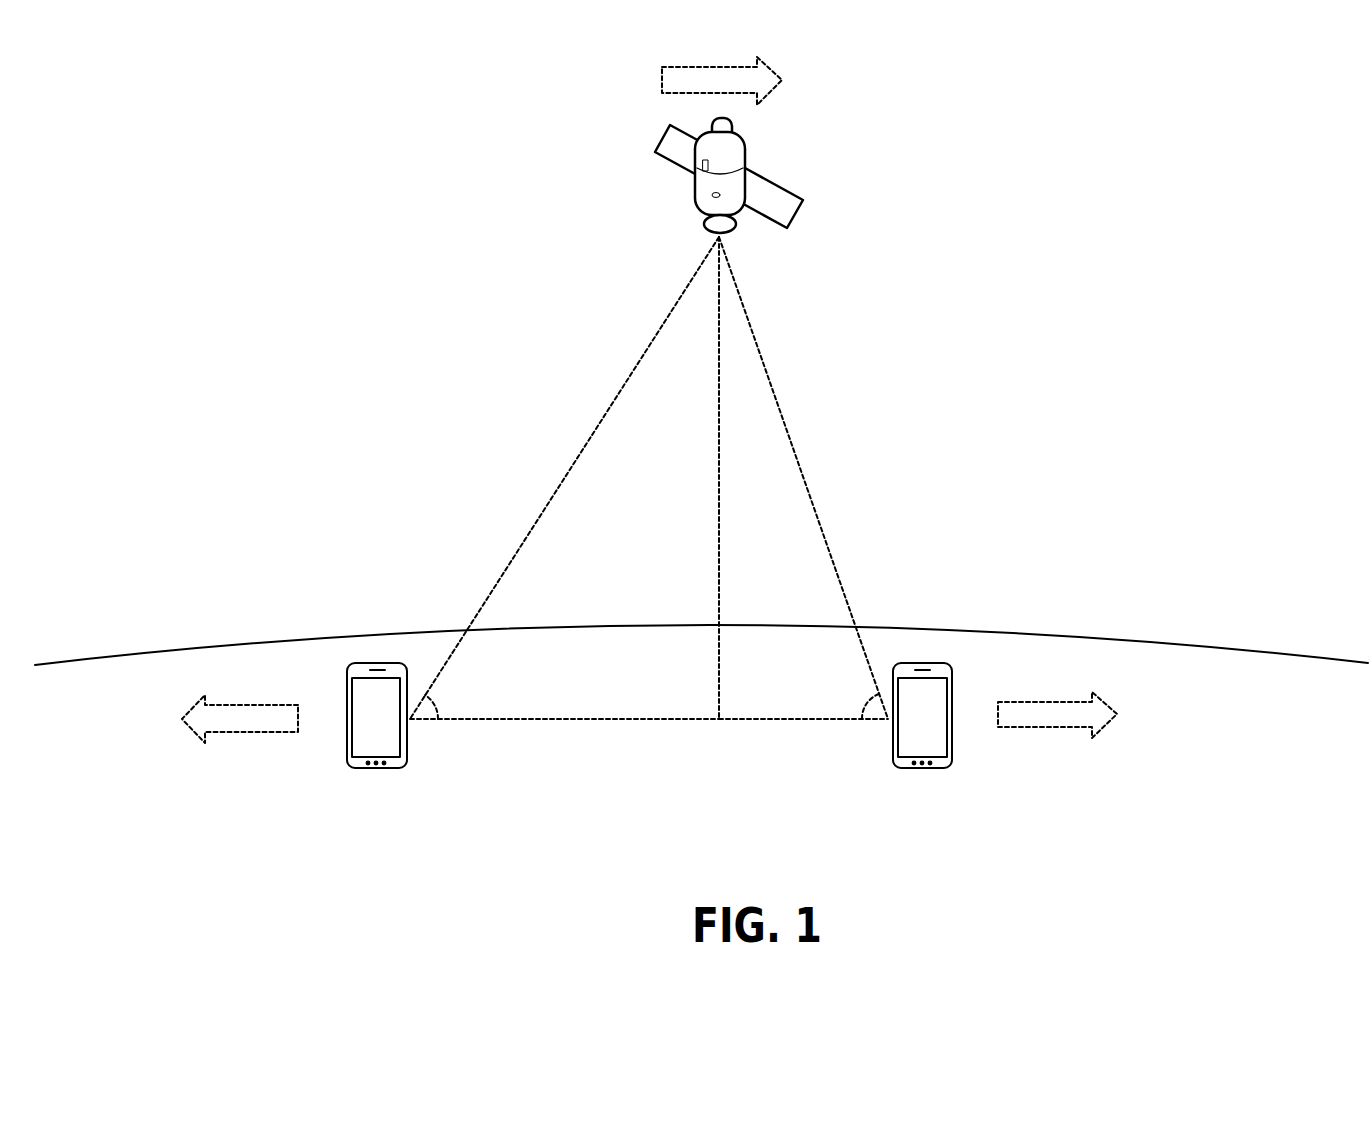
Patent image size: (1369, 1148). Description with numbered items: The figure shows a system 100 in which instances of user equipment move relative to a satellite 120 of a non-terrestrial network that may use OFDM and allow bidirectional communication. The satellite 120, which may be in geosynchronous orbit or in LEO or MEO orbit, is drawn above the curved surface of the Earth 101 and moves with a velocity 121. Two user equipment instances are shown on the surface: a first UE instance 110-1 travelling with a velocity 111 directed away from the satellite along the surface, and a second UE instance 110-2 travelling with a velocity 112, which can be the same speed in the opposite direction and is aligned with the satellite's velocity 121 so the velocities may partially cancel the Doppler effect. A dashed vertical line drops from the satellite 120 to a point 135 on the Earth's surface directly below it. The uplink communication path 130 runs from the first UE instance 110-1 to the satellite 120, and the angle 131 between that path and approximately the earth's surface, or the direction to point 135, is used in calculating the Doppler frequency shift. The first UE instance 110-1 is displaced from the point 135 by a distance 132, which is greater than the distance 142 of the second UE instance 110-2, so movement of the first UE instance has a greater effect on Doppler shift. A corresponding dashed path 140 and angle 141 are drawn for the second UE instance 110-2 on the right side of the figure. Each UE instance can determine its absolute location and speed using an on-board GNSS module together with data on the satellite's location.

The system 100 is at (272, 138).
The Earth 101 is at (280, 637).
The UE instance 110-1 is at (372, 770).
The UE instance 110-2 is at (916, 770).
The velocity 111 is at (240, 719).
The velocity 112 is at (1057, 715).
The satellite 120 is at (653, 148).
The velocity 121 is at (722, 81).
The uplink communication path 130 is at (557, 490).
The angle 131 is at (441, 709).
The distance 132 is at (600, 721).
The point 135 is at (718, 721).
The second signal path 140 is at (788, 428).
The second elevation angle 141 is at (862, 710).
The distance 142 is at (765, 721).